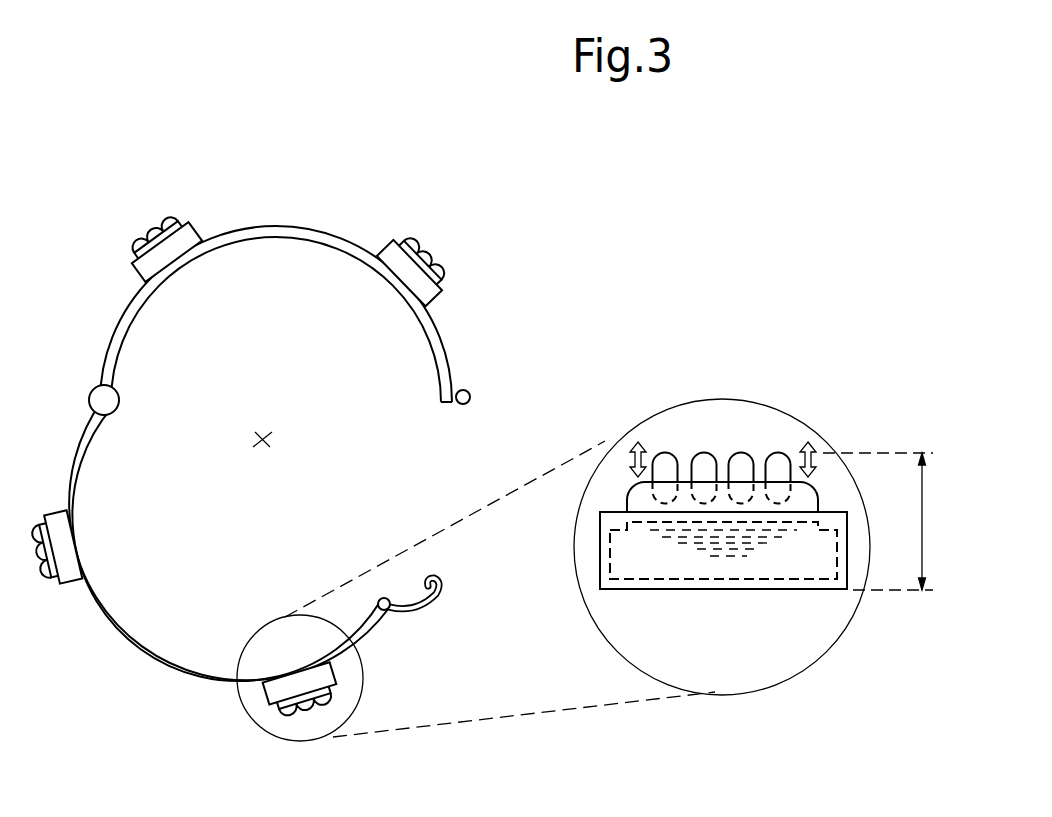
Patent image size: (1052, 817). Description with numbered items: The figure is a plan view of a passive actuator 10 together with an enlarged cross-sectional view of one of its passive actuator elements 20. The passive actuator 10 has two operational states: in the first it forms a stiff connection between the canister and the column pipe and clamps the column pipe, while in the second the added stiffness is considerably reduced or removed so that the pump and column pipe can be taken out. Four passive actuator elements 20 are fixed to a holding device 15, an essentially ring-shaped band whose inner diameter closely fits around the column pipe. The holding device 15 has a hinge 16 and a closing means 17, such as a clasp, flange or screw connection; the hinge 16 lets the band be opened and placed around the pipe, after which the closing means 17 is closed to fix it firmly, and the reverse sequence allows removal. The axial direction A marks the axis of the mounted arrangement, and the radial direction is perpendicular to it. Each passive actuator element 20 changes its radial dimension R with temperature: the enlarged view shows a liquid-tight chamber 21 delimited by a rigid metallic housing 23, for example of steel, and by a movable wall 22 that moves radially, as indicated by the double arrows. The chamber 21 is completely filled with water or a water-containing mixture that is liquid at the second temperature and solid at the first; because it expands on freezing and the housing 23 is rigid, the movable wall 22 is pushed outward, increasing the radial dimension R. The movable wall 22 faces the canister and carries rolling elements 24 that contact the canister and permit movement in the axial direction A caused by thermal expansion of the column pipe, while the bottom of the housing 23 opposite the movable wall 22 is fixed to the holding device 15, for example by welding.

The passive actuator 10 is at (295, 175).
The holding device 15 is at (338, 235).
The hinge 16 is at (90, 388).
The closing means 17 is at (472, 393).
The passive actuator element 20 is at (198, 233).
The liquid-tight chamber 21 is at (718, 560).
The movable wall 22 is at (685, 495).
The rigid metallic housing 23 is at (808, 591).
The rolling elements 24 is at (748, 448).
The axial direction A is at (262, 440).
The radial dimension R is at (884, 521).